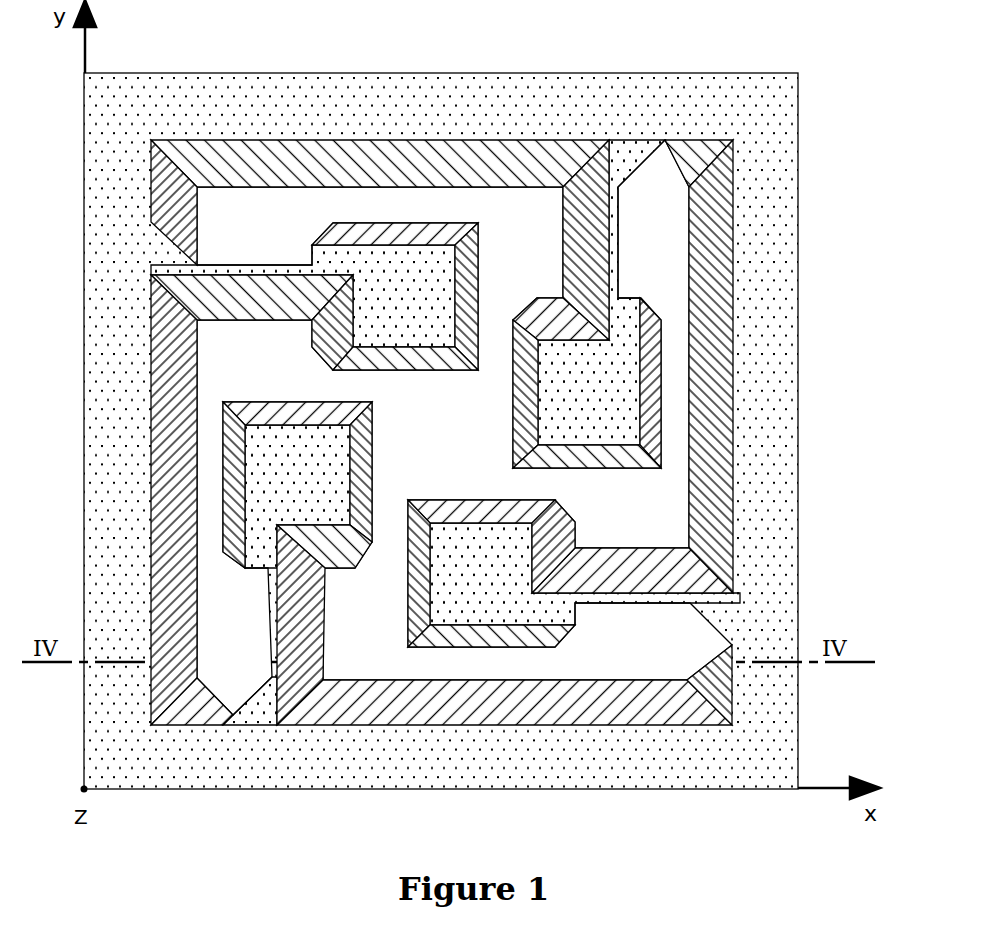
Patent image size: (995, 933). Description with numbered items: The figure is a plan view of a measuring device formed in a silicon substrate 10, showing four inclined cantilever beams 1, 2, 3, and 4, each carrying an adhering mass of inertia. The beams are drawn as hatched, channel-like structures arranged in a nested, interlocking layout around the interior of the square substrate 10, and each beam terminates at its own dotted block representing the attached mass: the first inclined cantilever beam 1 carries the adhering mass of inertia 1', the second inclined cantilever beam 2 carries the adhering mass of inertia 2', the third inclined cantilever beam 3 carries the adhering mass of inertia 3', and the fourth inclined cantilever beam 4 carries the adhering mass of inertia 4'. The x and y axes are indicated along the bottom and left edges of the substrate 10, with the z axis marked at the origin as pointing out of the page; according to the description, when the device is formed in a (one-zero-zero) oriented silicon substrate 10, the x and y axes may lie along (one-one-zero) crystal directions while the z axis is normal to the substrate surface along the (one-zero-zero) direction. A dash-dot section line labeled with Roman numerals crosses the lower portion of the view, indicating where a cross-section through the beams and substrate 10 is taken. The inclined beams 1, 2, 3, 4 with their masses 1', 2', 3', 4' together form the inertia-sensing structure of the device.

The silicon substrate 10 is at (799, 98).
The inclined cantilever beam 1 is at (504, 625).
The inclined cantilever beam 2 is at (679, 366).
The inclined cantilever beam 3 is at (632, 555).
The inclined cantilever beam 4 is at (380, 432).
The adhering mass of inertia 1' is at (297, 485).
The adhering mass of inertia 2' is at (587, 383).
The adhering mass of inertia 3' is at (491, 573).
The adhering mass of inertia 4' is at (395, 296).